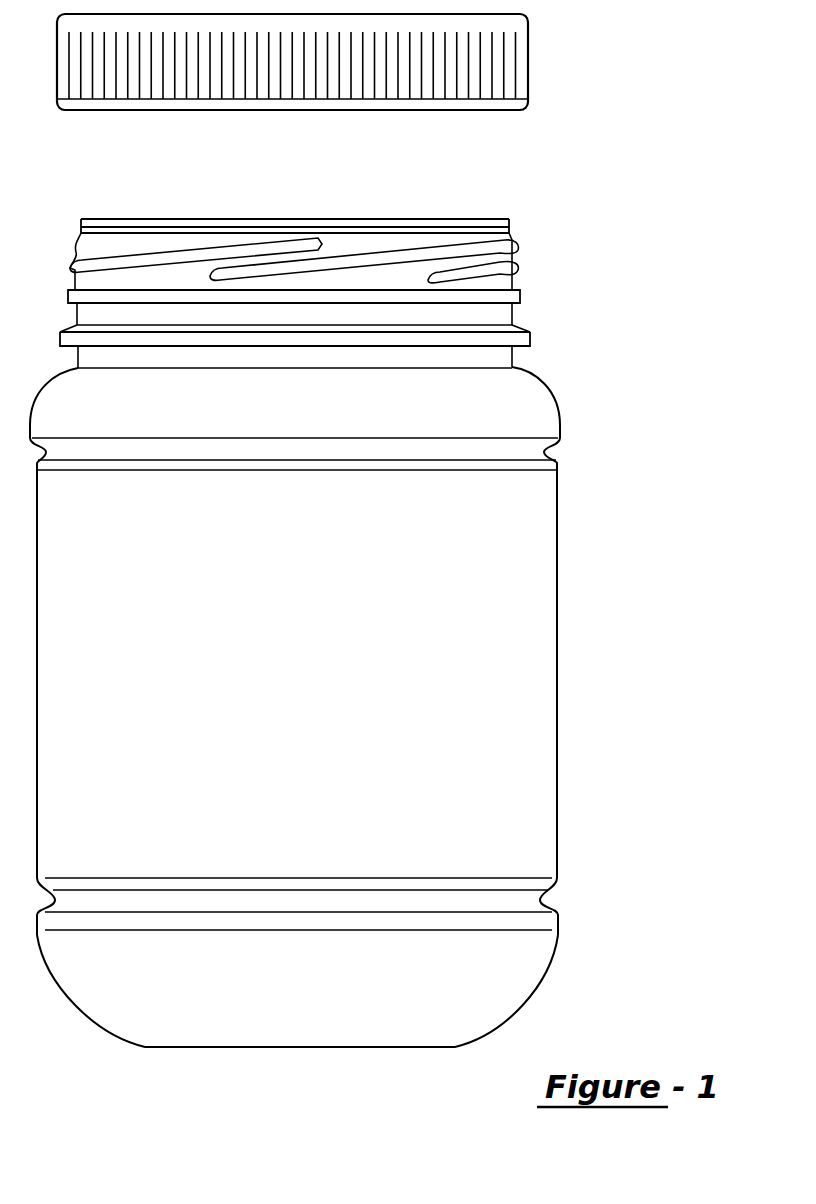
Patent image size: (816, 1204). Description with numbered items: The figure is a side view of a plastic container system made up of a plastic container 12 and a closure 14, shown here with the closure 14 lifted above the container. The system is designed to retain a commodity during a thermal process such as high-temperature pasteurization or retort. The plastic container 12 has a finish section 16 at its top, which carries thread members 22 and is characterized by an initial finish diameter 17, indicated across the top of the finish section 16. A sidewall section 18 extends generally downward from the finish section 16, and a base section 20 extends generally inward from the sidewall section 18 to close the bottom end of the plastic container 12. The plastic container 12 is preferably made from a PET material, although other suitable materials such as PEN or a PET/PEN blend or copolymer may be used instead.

The plastic container 12 is at (366, 633).
The closure 14 is at (465, 75).
The finish section 16 is at (520, 281).
The initial finish diameter 17 is at (81, 212).
The sidewall section 18 is at (535, 547).
The base section 20 is at (458, 965).
The thread members 22 is at (505, 318).